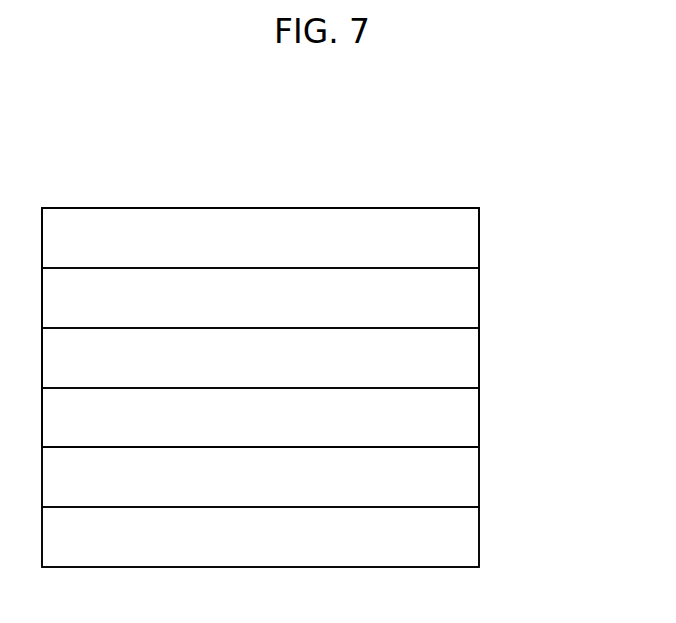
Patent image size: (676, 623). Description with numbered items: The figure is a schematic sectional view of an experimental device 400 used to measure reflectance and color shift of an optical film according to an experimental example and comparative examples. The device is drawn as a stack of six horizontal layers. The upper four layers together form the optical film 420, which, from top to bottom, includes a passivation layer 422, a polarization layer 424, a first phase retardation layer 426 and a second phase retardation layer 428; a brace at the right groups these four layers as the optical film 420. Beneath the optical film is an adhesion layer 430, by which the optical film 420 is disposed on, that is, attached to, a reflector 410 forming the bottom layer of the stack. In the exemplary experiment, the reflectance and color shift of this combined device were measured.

The light emitting device 400 is at (307, 156).
The reflector 410 is at (468, 537).
The optical film 420 is at (547, 222).
The passivation layer 422 is at (468, 239).
The polarization layer 424 is at (468, 298).
The first phase retardation layer 426 is at (468, 358).
The second phase retardation layer 428 is at (468, 417).
The adhesion layer 430 is at (468, 479).